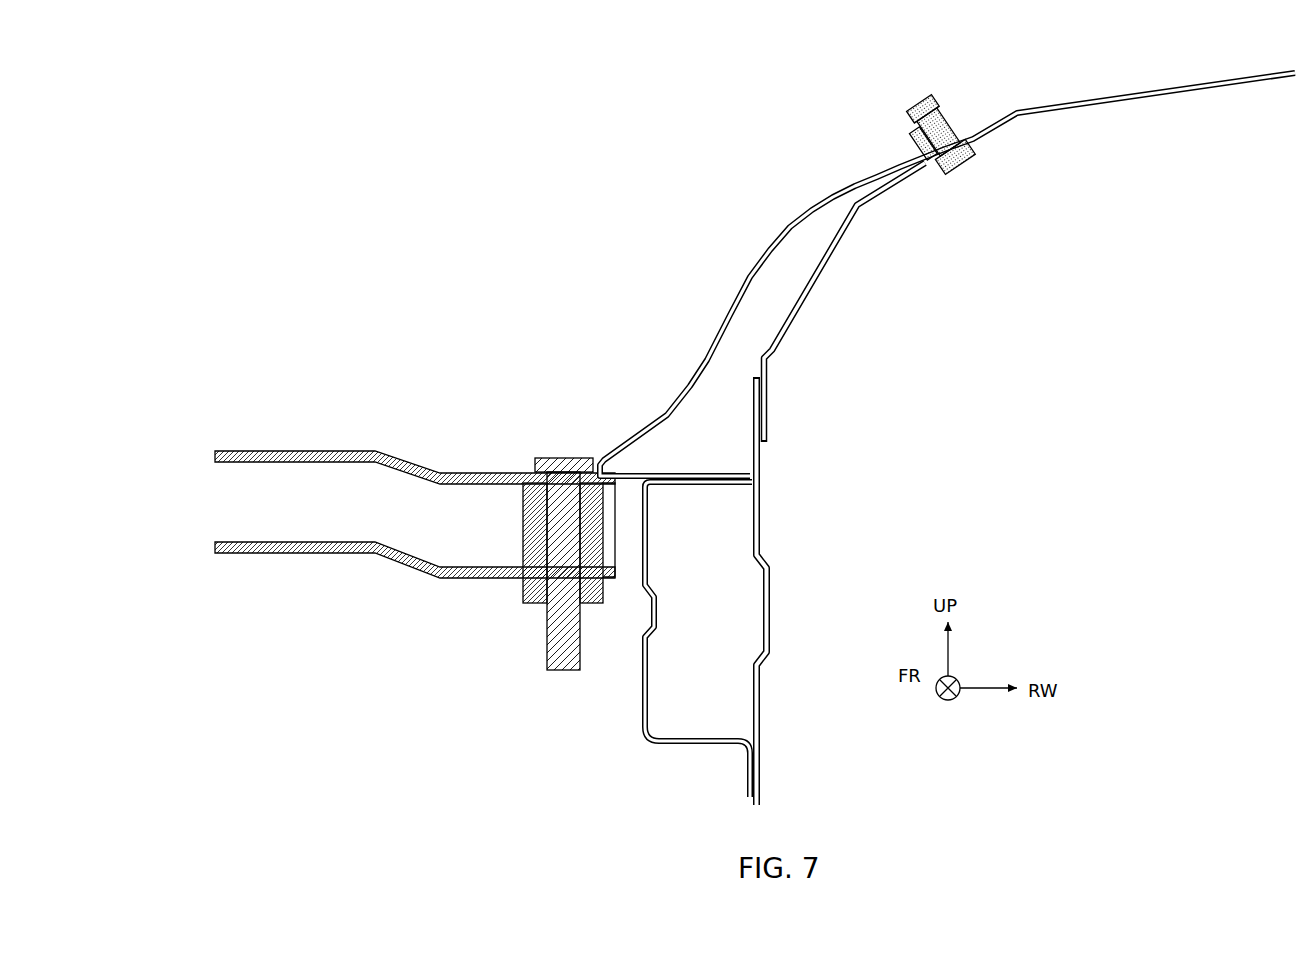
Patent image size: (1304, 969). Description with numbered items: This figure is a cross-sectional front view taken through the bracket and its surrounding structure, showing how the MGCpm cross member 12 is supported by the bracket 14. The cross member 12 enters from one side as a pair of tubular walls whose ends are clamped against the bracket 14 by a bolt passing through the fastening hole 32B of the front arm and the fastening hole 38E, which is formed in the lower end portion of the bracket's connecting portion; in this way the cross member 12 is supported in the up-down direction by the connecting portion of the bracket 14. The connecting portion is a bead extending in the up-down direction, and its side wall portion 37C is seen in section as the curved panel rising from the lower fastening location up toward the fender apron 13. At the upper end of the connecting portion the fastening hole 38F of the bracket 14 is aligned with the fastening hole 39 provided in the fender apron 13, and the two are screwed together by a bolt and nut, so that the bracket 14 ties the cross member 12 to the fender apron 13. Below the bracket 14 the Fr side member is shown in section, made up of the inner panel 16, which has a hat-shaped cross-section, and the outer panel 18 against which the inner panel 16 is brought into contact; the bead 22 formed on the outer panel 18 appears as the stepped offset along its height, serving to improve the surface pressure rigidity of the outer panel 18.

The MGCpm cross member 12 is at (348, 450).
The bracket 14 is at (658, 378).
The fastening hole 38E is at (570, 463).
The fastening hole 32B is at (545, 500).
The side wall portion 37C is at (783, 237).
The fender apron 13 is at (832, 250).
The fastening hole 38F is at (945, 124).
The fastening hole 39 is at (953, 160).
The bead 22 is at (768, 607).
The inner panel 16 is at (640, 700).
The outer panel 18 is at (760, 700).